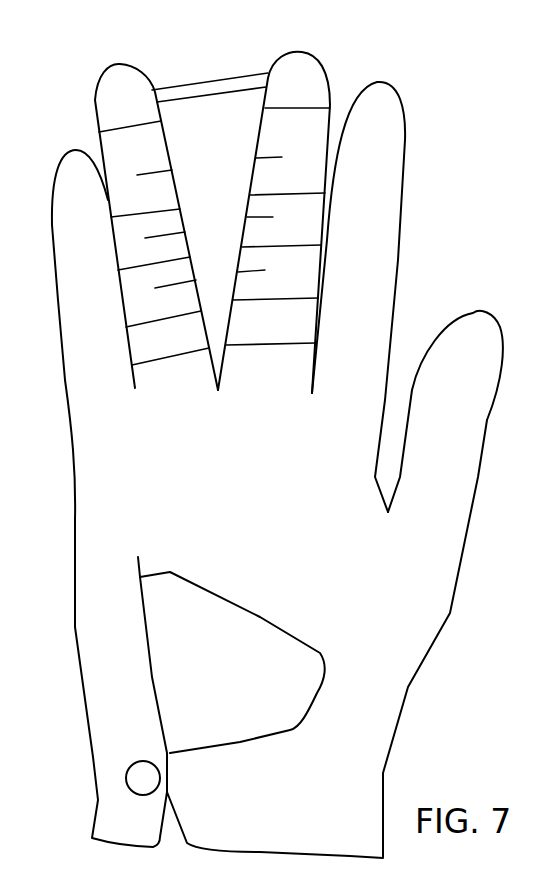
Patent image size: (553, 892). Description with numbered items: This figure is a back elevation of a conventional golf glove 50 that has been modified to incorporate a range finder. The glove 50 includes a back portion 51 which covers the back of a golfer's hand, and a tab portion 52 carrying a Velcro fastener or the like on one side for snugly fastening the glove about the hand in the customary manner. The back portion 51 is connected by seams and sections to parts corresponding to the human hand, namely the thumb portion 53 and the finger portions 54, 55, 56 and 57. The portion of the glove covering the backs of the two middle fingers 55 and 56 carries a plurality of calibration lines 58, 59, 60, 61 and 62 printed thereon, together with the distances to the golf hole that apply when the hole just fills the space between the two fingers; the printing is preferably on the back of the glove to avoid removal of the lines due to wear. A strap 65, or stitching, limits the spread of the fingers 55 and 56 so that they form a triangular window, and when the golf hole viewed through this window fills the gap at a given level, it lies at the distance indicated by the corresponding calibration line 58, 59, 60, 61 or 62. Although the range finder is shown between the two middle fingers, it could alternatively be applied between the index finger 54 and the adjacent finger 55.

The golf glove 50 is at (464, 667).
The back portion 51 is at (203, 628).
The tab portion 52 is at (232, 662).
The thumb portion 53 is at (477, 328).
The index finger portion 54 is at (383, 108).
The finger portion 55 is at (308, 70).
The finger portion 56 is at (117, 87).
The finger portion 57 is at (83, 172).
The calibration line 58 is at (246, 343).
The calibration line 59 is at (250, 300).
The calibration line 60 is at (250, 245).
The calibration line 61 is at (258, 195).
The calibration line 62 is at (272, 112).
The strap 65 is at (203, 83).